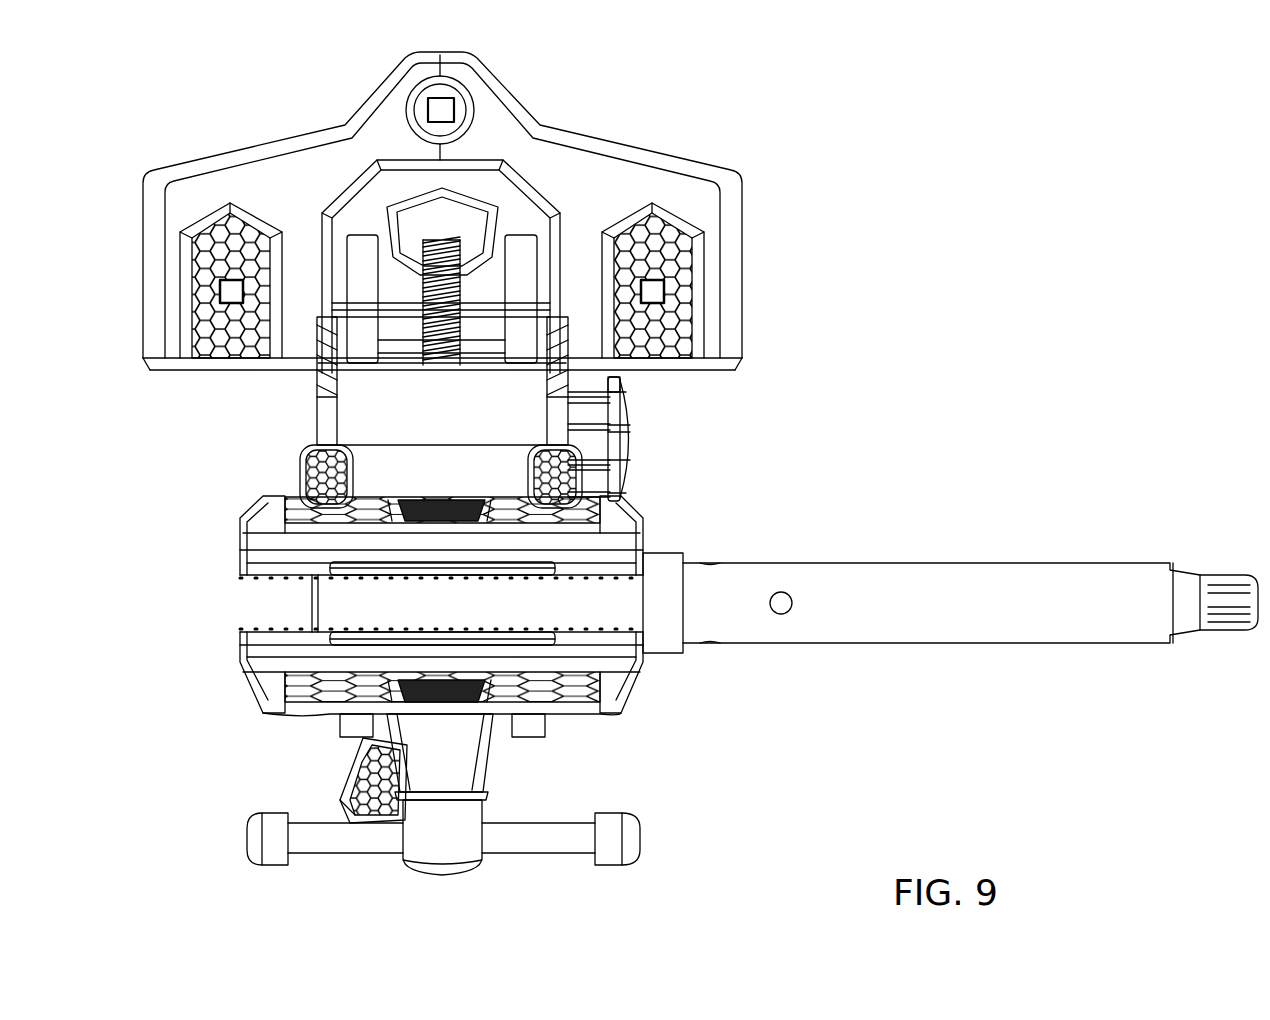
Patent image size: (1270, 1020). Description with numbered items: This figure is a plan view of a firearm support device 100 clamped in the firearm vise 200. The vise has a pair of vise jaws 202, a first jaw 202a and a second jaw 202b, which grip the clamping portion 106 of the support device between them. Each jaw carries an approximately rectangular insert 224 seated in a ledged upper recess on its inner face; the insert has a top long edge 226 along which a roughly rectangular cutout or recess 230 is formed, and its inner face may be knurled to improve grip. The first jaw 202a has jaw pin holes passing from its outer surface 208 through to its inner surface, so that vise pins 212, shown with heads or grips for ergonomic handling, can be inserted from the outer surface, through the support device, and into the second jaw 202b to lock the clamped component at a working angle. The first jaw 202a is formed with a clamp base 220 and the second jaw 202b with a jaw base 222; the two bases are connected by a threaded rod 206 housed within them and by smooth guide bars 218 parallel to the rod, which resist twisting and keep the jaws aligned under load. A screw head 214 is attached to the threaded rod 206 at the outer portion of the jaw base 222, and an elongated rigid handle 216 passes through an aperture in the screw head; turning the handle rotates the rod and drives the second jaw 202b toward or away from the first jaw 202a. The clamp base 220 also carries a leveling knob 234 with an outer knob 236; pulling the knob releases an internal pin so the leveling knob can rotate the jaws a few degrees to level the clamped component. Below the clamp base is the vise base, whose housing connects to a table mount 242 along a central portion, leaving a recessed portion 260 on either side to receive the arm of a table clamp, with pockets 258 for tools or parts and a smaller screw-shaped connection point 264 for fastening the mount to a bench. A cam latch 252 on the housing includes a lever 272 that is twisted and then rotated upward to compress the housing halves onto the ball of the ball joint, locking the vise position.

The firearm support device 100 is at (1019, 548).
The clamping portion 106 is at (598, 610).
The firearm vise 200 is at (182, 411).
The vise jaws 202 is at (452, 611).
The first jaw 202a is at (262, 516).
The second jaw 202b is at (258, 690).
The threaded rod 206 is at (440, 238).
The outer surface 208 is at (300, 500).
The vise pins 212 is at (318, 466).
The screw head 214 is at (449, 858).
The handle 216 is at (543, 841).
The guide bars 218 is at (362, 245).
The clamp base 220 is at (325, 410).
The jaw base 222 is at (470, 779).
The insert 224 is at (303, 578).
The top long edge 226 is at (263, 571).
The cutout or recess 230 is at (355, 568).
The leveling knob 234 is at (648, 433).
The knob 236 is at (626, 384).
The table mount 242 is at (238, 150).
The cam latch 252 is at (342, 782).
The pockets 258 is at (425, 215).
The recessed portion 260 is at (230, 243).
The connection point 264 is at (447, 93).
The lever 272 is at (373, 814).